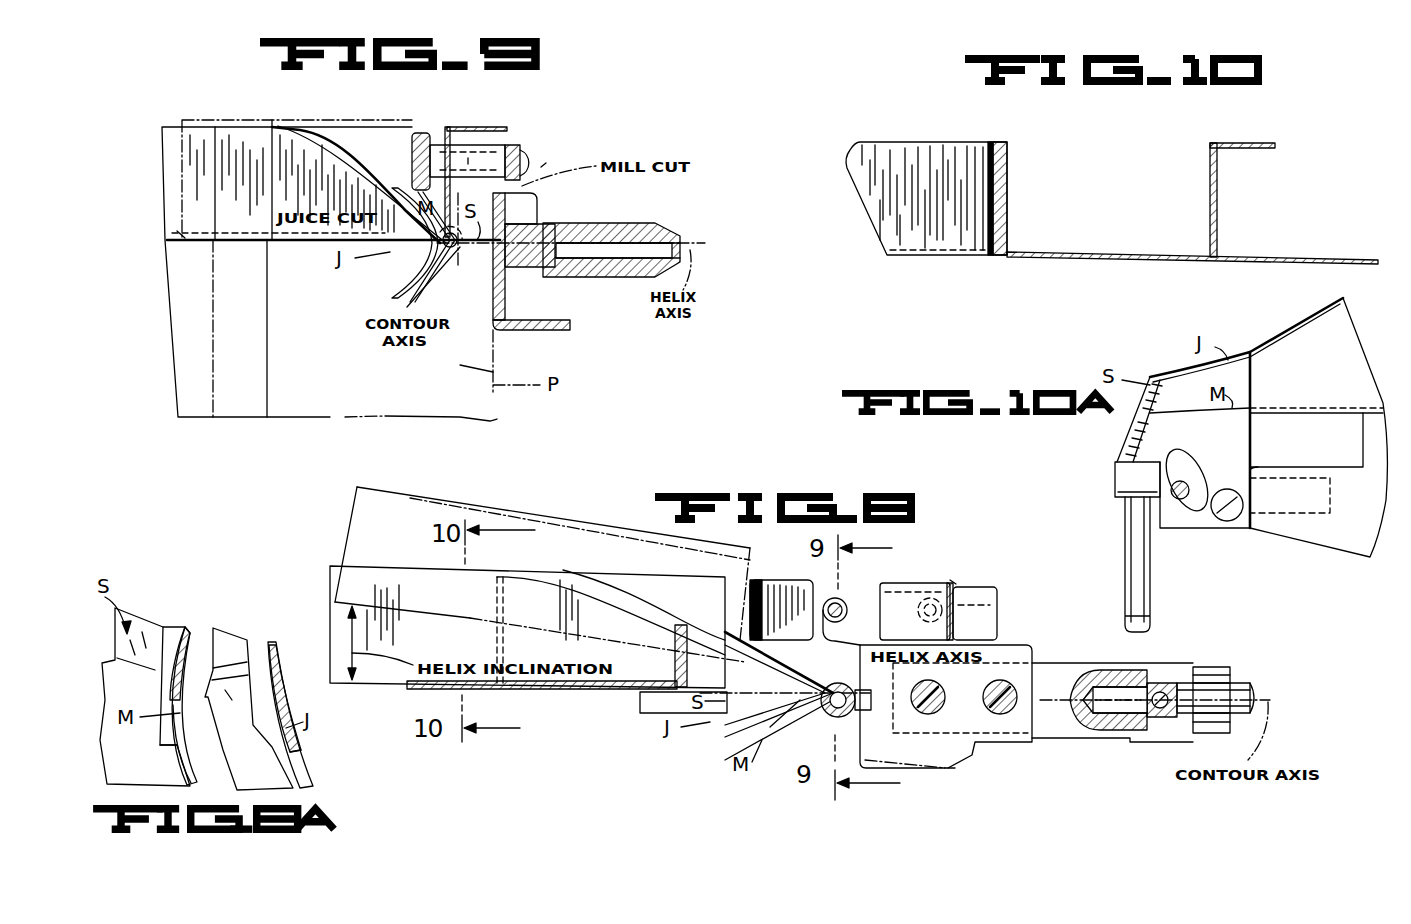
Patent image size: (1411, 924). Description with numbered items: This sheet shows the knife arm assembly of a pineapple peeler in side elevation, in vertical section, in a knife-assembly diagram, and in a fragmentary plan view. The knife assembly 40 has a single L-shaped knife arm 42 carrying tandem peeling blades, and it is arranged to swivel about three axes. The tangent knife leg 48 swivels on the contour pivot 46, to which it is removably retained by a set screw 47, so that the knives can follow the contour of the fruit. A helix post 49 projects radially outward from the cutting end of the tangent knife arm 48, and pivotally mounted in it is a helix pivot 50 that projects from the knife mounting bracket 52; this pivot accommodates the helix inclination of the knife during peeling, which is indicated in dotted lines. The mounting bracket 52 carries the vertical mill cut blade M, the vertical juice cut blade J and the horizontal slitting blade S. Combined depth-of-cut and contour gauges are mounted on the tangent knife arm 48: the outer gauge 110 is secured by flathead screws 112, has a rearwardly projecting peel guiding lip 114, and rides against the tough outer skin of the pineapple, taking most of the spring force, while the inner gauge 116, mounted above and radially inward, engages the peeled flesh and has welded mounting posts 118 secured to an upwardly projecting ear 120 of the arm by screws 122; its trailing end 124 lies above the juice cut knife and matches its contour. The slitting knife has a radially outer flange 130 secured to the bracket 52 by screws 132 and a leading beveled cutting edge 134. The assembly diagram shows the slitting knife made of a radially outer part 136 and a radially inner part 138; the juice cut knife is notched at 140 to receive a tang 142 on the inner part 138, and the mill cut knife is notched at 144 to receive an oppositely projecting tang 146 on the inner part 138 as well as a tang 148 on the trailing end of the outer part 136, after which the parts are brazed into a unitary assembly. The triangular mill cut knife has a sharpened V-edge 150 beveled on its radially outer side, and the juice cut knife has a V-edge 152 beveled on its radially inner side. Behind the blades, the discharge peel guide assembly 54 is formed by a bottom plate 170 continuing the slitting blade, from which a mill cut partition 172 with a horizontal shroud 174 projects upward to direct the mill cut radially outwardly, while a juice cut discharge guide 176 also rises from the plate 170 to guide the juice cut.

In FIG. 9, the knife assembly 40 is at (544, 167).
In FIG. 8, the knife assembly 40 is at (950, 583).
In FIG. 9, the knife arm 42 is at (541, 224).
In FIG. 8, the knife arm 42 is at (1046, 664).
In FIG. 9, the contour pivot 46 is at (458, 268).
In FIG. 8, the contour pivot 46 is at (1237, 688).
In FIG. 8, the set screw 47 is at (1178, 720).
In FIG. 8, the tangent knife leg 48 is at (1050, 731).
In FIG. 9, the helix post 49 is at (648, 236).
In FIG. 8, the helix post 49 is at (856, 702).
In FIG. 9, the helix pivot 50 is at (576, 240).
In FIG. 10A, the helix pivot 50 is at (1183, 562).
In FIG. 8, the helix pivot 50 is at (838, 683).
In FIG. 10A, the knife mounting bracket 52 is at (1290, 513).
In FIG. 8, the knife mounting bracket 52 is at (643, 702).
In FIG. 9, the discharge peel guide assembly 54 is at (177, 166).
In FIG. 10, the discharge peel guide assembly 54 is at (1140, 160).
In FIG. 8, the discharge peel guide assembly 54 is at (331, 608).
In FIG. 9, the outer gauge 110 is at (505, 290).
In FIG. 8, the outer gauge 110 is at (970, 755).
In FIG. 8, the flathead screws 112 is at (995, 703).
In FIG. 9, the peel guiding lip 114 is at (530, 331).
In FIG. 8, the peel guiding lip 114 is at (950, 770).
In FIG. 9, the inner gauge 116 is at (412, 150).
In FIG. 8, the inner gauge 116 is at (998, 628).
In FIG. 9, the mounting posts 118 is at (500, 145).
In FIG. 8, the mounting posts 118 is at (953, 587).
In FIG. 9, the ear 120 is at (530, 140).
In FIG. 8, the ear 120 is at (890, 591).
In FIG. 8, the screws 122 is at (860, 585).
In FIG. 8, the trailing end 124 is at (745, 572).
In FIG. 10A, the flange 130 is at (1198, 527).
In FIG. 10A, the screws 132 is at (1188, 486).
In FIG. 10A, the beveled cutting edge 134 is at (1126, 434).
In FIG. 8A, the beveled cutting edge 134 is at (230, 628).
In FIG. 10A, the radially outer part 136 is at (1308, 467).
In FIG. 8A, the radially outer part 136 is at (156, 779).
In FIG. 10A, the radially inner part 138 is at (1238, 380).
In FIG. 8A, the radially inner part 138 is at (278, 785).
In FIG. 8A, the notch 140 is at (308, 776).
In FIG. 8A, the tang 142 is at (278, 760).
In FIG. 8A, the notch 144 is at (190, 745).
In FIG. 8A, the tang 146 is at (235, 719).
In FIG. 8A, the tang 148 is at (177, 757).
In FIG. 8, the V-edge 150 is at (772, 732).
In FIG. 8, the V-edge 152 is at (725, 742).
In FIG. 9, the bottom plate 170 is at (183, 232).
In FIG. 10, the bottom plate 170 is at (1157, 256).
In FIG. 10A, the bottom plate 170 is at (1350, 367).
In FIG. 8, the bottom plate 170 is at (512, 689).
In FIG. 9, the mill cut partition 172 is at (440, 128).
In FIG. 10, the mill cut partition 172 is at (1217, 197).
In FIG. 10A, the mill cut partition 172 is at (1378, 408).
In FIG. 8, the mill cut partition 172 is at (352, 510).
In FIG. 9, the horizontal shroud 174 is at (475, 127).
In FIG. 10, the horizontal shroud 174 is at (1256, 143).
In FIG. 10A, the horizontal shroud 174 is at (1325, 447).
In FIG. 9, the juice cut discharge guide 176 is at (245, 133).
In FIG. 10, the juice cut discharge guide 176 is at (1007, 157).
In FIG. 10A, the juice cut discharge guide 176 is at (1315, 316).
In FIG. 8, the juice cut discharge guide 176 is at (560, 578).